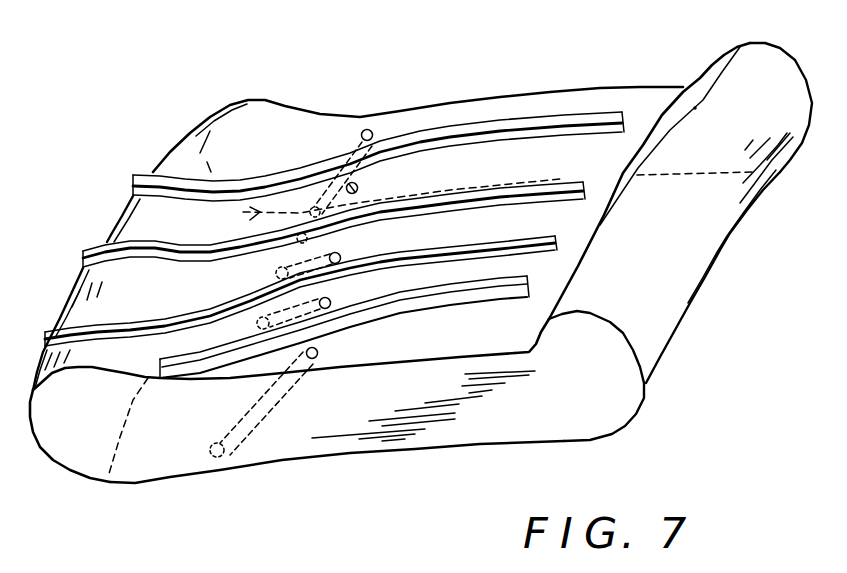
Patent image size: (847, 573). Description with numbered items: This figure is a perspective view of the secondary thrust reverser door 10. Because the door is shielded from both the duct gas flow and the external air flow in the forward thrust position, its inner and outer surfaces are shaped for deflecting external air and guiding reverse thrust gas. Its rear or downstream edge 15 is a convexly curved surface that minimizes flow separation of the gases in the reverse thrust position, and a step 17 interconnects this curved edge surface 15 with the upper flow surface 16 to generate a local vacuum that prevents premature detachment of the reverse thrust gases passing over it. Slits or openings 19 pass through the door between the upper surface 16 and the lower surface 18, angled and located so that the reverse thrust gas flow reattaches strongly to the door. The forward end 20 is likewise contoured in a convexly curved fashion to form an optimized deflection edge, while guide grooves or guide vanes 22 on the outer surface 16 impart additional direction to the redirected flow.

The secondary thrust reverser door 10 is at (411, 278).
The rear or downstream edge 15 is at (680, 242).
The upper flow surface 16 is at (358, 211).
The step 17 is at (506, 336).
The lower surface 18 is at (298, 442).
The slits or openings 19 is at (393, 179).
The forward end 20 is at (60, 451).
The guide grooves or guide vanes 22 is at (378, 133).